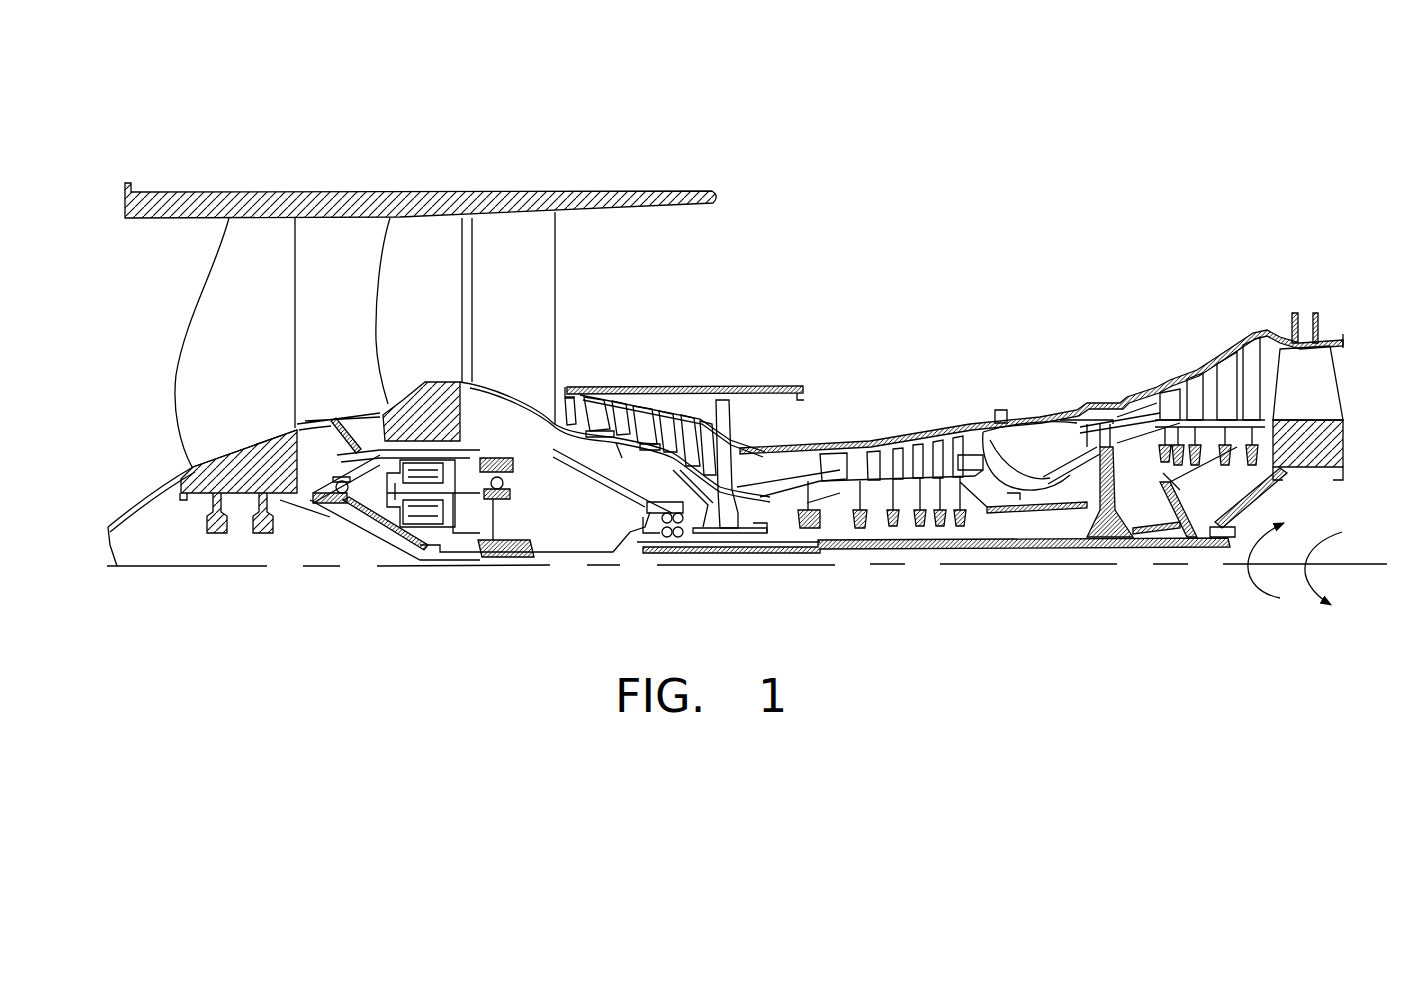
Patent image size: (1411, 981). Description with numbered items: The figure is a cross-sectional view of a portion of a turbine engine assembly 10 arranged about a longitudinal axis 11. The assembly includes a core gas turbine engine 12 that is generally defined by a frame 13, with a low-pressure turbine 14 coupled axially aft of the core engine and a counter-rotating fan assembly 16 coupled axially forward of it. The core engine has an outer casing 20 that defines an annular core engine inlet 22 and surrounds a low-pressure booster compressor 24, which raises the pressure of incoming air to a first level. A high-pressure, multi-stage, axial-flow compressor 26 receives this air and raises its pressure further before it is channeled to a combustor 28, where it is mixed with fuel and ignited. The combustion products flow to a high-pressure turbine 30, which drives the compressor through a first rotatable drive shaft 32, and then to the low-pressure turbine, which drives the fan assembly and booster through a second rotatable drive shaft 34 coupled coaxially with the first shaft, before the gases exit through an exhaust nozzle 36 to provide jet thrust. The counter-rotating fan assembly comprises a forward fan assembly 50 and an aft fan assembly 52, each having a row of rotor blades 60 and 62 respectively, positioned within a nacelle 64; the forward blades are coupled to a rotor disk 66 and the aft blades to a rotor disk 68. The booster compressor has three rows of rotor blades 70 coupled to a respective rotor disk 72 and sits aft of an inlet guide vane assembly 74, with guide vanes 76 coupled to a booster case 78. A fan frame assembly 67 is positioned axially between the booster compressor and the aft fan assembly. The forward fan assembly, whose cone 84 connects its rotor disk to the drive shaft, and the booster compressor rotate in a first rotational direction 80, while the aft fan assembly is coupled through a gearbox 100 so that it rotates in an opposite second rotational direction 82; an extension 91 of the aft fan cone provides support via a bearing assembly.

The turbine engine assembly 10 is at (1176, 95).
The longitudinal axis 11 is at (830, 576).
The core gas turbine engine 12 is at (963, 405).
The frame 13 is at (637, 532).
The low-pressure turbine 14 is at (1229, 318).
The counter-rotating fan assembly 16 is at (427, 168).
The outer casing 20 is at (804, 442).
The annular core engine inlet 22 is at (553, 398).
The low-pressure booster compressor 24 is at (631, 368).
The high-pressure multi-stage axial-flow compressor 26 is at (869, 433).
The combustor 28 is at (1032, 435).
The high-pressure turbine 30 is at (1092, 548).
The first rotatable drive shaft 32 is at (1027, 507).
The second rotatable drive shaft 34 is at (928, 548).
The exhaust nozzle 36 is at (1358, 356).
The forward fan assembly 50 is at (186, 285).
The aft fan assembly 52 is at (357, 313).
The rotor blades 60 is at (212, 383).
The rotor blades 62 is at (400, 309).
The nacelle 64 is at (606, 186).
The rotor disk 66 is at (218, 530).
The fan frame assembly 67 is at (541, 256).
The rotor disk 68 is at (415, 415).
The rotor blades 70 is at (601, 397).
The rotor disk 72 is at (620, 440).
The inlet guide vane assembly 74 is at (568, 404).
The guide vanes 76 is at (658, 417).
The booster case 78 is at (683, 410).
The first rotational direction 80 is at (1264, 597).
The second rotational direction 82 is at (1331, 530).
The cone 84 is at (353, 523).
The extension 91 is at (380, 521).
The gearbox 100 is at (453, 536).